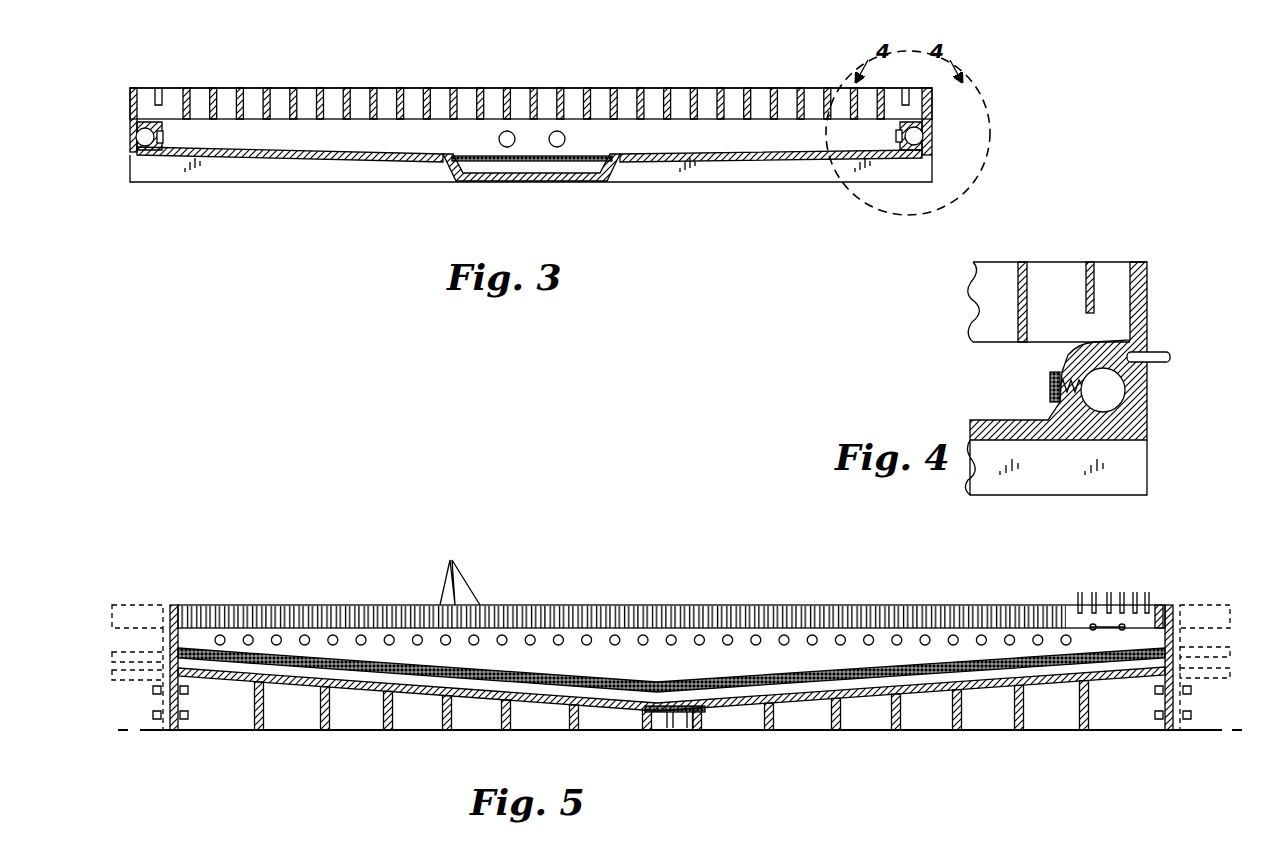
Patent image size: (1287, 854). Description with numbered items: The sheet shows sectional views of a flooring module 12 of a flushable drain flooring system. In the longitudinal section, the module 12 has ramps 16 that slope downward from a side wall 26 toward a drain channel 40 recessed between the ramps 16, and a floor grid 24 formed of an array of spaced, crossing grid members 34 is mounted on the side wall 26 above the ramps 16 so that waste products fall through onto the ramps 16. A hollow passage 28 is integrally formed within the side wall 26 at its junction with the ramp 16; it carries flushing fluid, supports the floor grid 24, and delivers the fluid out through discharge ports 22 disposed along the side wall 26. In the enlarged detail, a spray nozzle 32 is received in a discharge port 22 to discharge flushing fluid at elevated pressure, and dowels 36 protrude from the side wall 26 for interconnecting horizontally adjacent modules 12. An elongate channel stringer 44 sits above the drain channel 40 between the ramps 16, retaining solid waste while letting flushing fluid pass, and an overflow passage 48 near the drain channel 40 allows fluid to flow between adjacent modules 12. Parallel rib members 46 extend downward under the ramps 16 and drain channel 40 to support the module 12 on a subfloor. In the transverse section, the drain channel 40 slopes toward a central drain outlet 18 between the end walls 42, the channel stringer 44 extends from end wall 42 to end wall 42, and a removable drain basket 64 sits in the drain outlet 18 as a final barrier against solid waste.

In FIG. 3, the module 12 is at (588, 70).
In FIG. 5, the module 12 is at (153, 592).
In FIG. 3, the ramp 16 is at (282, 160).
In FIG. 5, the drain outlet 18 is at (700, 731).
In FIG. 5, the discharge ports 22 is at (726, 636).
In FIG. 3, the floor grid 24 is at (222, 88).
In FIG. 4, the floor grid 24 is at (978, 302).
In FIG. 5, the floor grid 24 is at (422, 604).
In FIG. 3, the side wall 26 is at (130, 112).
In FIG. 4, the side wall 26 is at (1140, 284).
In FIG. 3, the hollow passage 28 is at (136, 142).
In FIG. 4, the hollow passage 28 is at (1125, 390).
In FIG. 3, the spray nozzle 32 is at (897, 140).
In FIG. 4, the spray nozzle 32 is at (1050, 386).
In FIG. 3, the grid members 34 is at (320, 88).
In FIG. 4, the grid members 34 is at (1090, 262).
In FIG. 5, the grid members 34 is at (460, 567).
In FIG. 4, the dowels 36 is at (1162, 352).
In FIG. 3, the drain channel 40 is at (566, 178).
In FIG. 5, the drain channel 40 is at (430, 700).
In FIG. 5, the end walls 42 is at (172, 604).
In FIG. 3, the channel stringer 44 is at (483, 163).
In FIG. 5, the channel stringer 44 is at (545, 680).
In FIG. 3, the rib members 46 is at (198, 166).
In FIG. 4, the rib members 46 is at (1122, 482).
In FIG. 5, the rib members 46 is at (325, 731).
In FIG. 3, the overflow passage 48 is at (555, 147).
In FIG. 5, the drain basket 64 is at (663, 731).